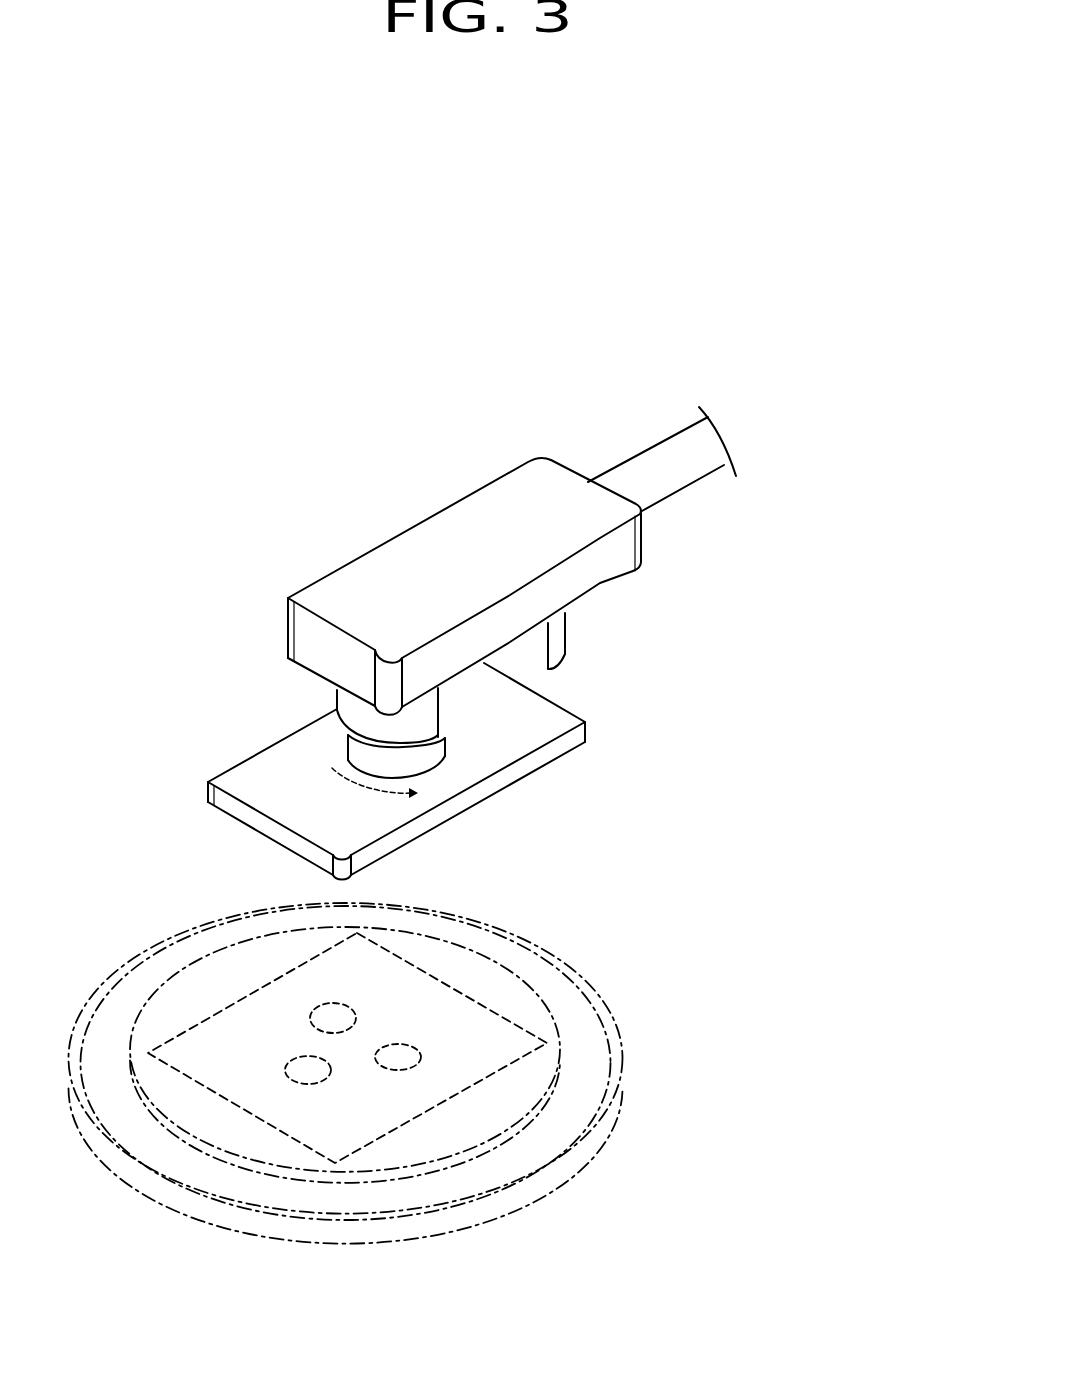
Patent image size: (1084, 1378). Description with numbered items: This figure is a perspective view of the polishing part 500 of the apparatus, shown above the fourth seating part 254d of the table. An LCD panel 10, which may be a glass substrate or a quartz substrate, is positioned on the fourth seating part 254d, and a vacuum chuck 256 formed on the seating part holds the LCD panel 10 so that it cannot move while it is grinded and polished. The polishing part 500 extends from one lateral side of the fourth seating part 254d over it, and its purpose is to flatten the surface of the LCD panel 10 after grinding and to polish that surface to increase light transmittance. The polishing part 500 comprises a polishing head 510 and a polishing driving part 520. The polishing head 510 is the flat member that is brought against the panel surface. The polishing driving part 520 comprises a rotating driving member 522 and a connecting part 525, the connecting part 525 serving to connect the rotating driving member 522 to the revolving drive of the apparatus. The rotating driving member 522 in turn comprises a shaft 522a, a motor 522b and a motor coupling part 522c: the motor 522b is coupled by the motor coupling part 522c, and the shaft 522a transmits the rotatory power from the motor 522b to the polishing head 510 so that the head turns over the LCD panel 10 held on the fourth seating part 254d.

The LCD panel 10 is at (273, 1128).
The fourth seating part 254d is at (318, 1239).
The vacuum chuck 256 is at (408, 1070).
The polishing part 500 is at (900, 640).
The polishing head 510 is at (527, 770).
The polishing driving part 520 is at (823, 582).
The rotating driving member 522 is at (747, 628).
The shaft 522a is at (447, 742).
The motor 522b is at (565, 657).
The motor coupling part 522c is at (617, 567).
The connecting part 525 is at (688, 484).